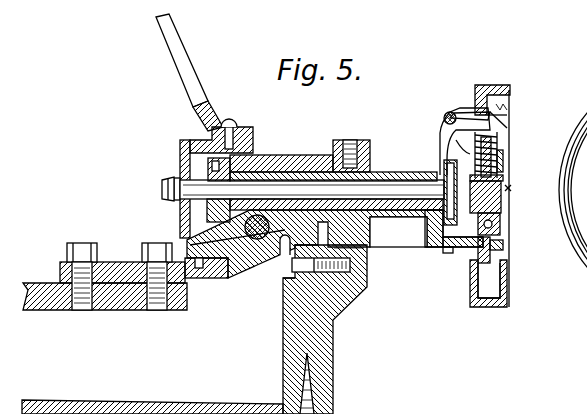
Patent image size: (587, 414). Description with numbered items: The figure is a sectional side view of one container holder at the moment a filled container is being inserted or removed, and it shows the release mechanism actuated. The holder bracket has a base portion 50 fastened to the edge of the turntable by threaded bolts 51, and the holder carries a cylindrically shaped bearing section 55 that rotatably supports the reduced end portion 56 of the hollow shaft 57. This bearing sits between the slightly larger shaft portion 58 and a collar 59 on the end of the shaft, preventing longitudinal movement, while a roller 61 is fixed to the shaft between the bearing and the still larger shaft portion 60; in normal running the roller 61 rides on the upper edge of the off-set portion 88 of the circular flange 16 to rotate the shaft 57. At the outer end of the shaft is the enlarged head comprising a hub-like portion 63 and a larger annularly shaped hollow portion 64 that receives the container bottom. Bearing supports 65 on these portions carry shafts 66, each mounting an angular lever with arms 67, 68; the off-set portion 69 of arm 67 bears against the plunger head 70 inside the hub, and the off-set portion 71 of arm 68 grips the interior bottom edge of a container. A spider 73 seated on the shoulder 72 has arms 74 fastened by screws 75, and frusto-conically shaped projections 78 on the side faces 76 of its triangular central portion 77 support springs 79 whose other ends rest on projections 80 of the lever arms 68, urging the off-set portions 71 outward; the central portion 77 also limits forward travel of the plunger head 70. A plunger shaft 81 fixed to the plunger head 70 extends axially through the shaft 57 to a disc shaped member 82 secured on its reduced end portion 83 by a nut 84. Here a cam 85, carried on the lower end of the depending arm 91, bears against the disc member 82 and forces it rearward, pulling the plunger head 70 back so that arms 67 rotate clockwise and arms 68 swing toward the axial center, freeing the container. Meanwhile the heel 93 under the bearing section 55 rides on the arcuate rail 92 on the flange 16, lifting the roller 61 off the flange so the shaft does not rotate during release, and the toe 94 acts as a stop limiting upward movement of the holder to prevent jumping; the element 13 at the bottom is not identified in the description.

The base plate 13 is at (192, 408).
The circular flange 16 is at (325, 350).
The base portion 50 is at (108, 311).
The threaded bolts 51 is at (83, 245).
The cylindrically shaped section 55 is at (275, 163).
The reduced end portion 56 is at (311, 174).
The hollow shaft 57 is at (393, 163).
The shaft portion 58 is at (368, 214).
The collar 59 is at (208, 214).
The shaft portion 60 is at (399, 216).
The roller 61 is at (364, 142).
The hub-like portion 63 is at (437, 248).
The annularly shaped hollow portion 64 is at (493, 306).
The bearing supports 65 is at (466, 108).
The shaft 66 is at (448, 114).
The lever arm 67 is at (442, 135).
The lever arm 68 is at (463, 102).
The off-set portion 69 is at (443, 165).
The plunger head 70 is at (485, 157).
The off-set portion 71 is at (505, 112).
The shoulder 72 is at (482, 273).
The spider 73 is at (511, 188).
The spider arms 74 is at (490, 258).
The screws 75 is at (497, 245).
The side faces 76 is at (500, 178).
The central portion 77 is at (485, 200).
The frusto-conically shaped projections 78 is at (497, 167).
The springs 79 is at (499, 157).
The projections 80 is at (488, 137).
The plunger shaft 81 is at (312, 190).
The disc shaped member 82 is at (180, 148).
The reduced end portion 83 is at (176, 178).
The nut 84 is at (163, 189).
The cam 85 is at (213, 124).
The off-set portion 88 is at (352, 250).
The depending arm 91 is at (176, 46).
The rail 92 is at (291, 279).
The heel 93 is at (292, 254).
The toe 94 is at (200, 280).